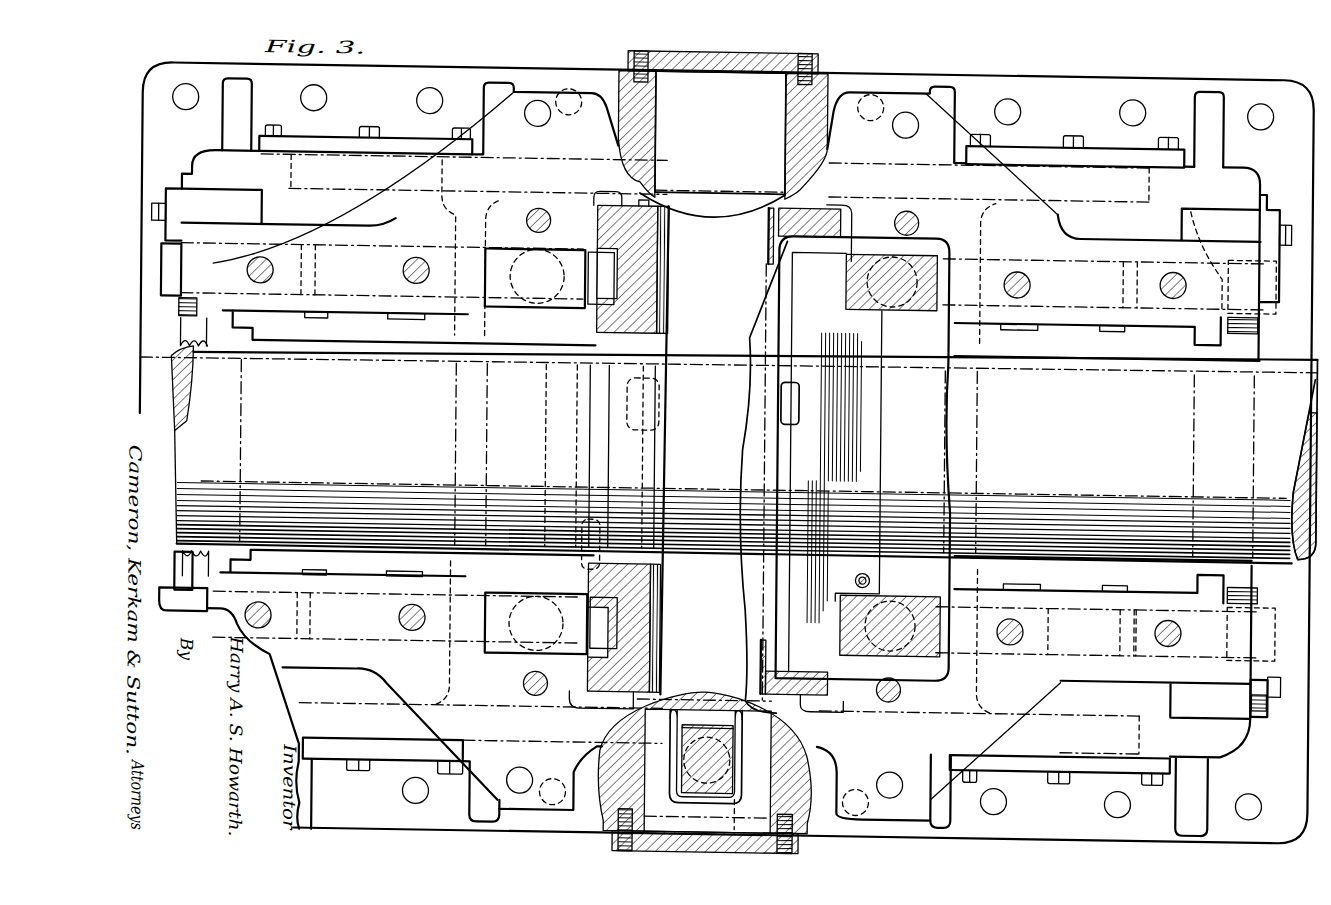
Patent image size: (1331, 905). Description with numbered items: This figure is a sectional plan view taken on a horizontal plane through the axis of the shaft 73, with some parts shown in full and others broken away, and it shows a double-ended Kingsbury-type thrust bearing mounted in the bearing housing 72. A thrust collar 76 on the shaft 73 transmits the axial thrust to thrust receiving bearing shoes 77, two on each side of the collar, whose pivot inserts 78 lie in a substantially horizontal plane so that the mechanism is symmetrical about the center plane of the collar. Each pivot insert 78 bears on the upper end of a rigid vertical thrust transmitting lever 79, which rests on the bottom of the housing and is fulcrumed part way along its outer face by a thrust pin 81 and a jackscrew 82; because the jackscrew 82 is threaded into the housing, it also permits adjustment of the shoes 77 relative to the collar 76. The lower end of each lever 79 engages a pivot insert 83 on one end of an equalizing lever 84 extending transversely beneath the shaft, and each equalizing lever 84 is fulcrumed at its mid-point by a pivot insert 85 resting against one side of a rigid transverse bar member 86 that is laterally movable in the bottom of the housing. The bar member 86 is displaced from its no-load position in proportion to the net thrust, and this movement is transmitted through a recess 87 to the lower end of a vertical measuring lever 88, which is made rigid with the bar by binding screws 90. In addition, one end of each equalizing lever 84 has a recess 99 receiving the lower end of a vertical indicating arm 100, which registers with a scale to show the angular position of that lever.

The bearing housing casting 72 is at (1017, 191).
The shaft 73 is at (1273, 372).
The thrust collar 76 is at (731, 393).
The thrust receiving bearing shoes 77 is at (637, 290).
The pivot insert 78 is at (608, 270).
The vertical thrust transmitting lever 79 is at (503, 264).
The thrust pin 81 is at (1059, 605).
The jackscrew 82 is at (1147, 604).
The pivot insert 83 is at (847, 267).
The equalizing lever 84 is at (875, 466).
The pivot insert 85 is at (794, 418).
The transverse bar member 86 is at (775, 98).
The recess 87 is at (709, 716).
The vertical measuring lever 88 is at (737, 735).
The binding screws 90 is at (627, 792).
The recess 99 is at (863, 564).
The vertical indicating arm 100 is at (875, 569).